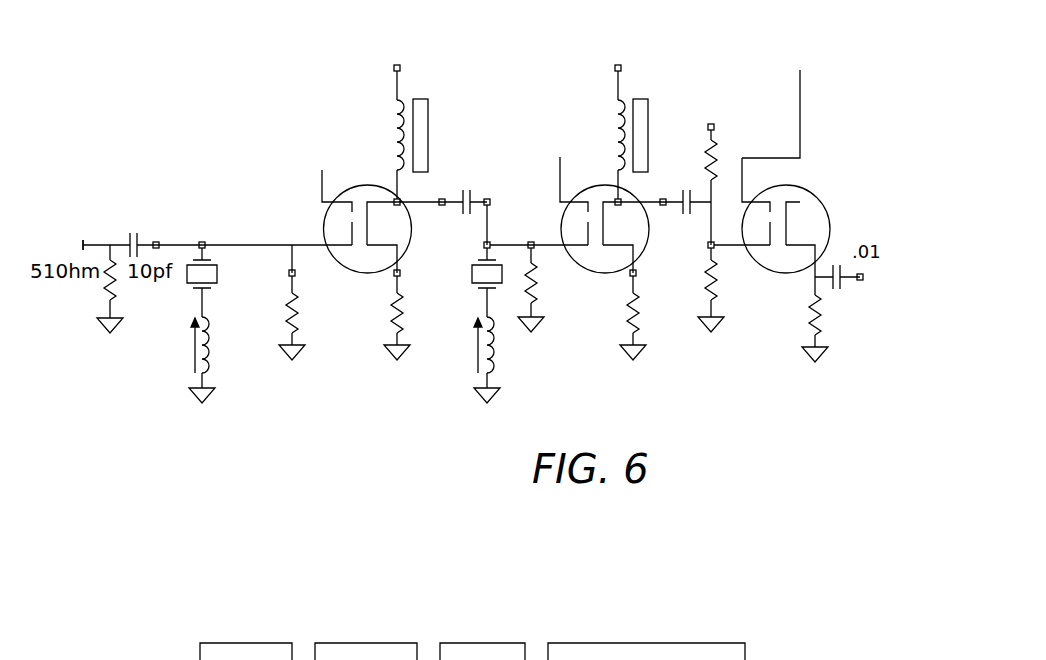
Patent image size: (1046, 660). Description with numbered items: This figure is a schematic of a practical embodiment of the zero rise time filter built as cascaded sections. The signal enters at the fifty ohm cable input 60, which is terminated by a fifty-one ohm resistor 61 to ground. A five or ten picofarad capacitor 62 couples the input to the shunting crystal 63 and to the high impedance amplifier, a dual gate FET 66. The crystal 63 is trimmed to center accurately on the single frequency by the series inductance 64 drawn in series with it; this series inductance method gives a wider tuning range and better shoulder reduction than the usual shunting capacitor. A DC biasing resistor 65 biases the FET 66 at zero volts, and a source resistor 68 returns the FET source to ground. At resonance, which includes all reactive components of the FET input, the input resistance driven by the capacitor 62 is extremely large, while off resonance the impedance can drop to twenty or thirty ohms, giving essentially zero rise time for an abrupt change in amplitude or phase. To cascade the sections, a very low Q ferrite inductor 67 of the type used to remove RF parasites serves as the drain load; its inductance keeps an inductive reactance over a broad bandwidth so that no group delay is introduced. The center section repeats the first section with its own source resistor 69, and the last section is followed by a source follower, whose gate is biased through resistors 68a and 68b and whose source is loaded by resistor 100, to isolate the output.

The cable input 60 is at (85, 242).
The resistor 61 is at (102, 288).
The capacitor 62 is at (143, 235).
The crystal 63 is at (220, 268).
The series inductance 64 is at (185, 378).
The DC biasing resistor 65 is at (278, 315).
The dual gate FET 66 is at (358, 187).
The ferrite inductor 67 is at (393, 137).
The source resistor 68 is at (410, 318).
The bias resistor 68a is at (718, 153).
The bias resistor 68b is at (718, 288).
The source resistor / output transistor 69 is at (642, 318).
The output resistor 100 is at (823, 317).